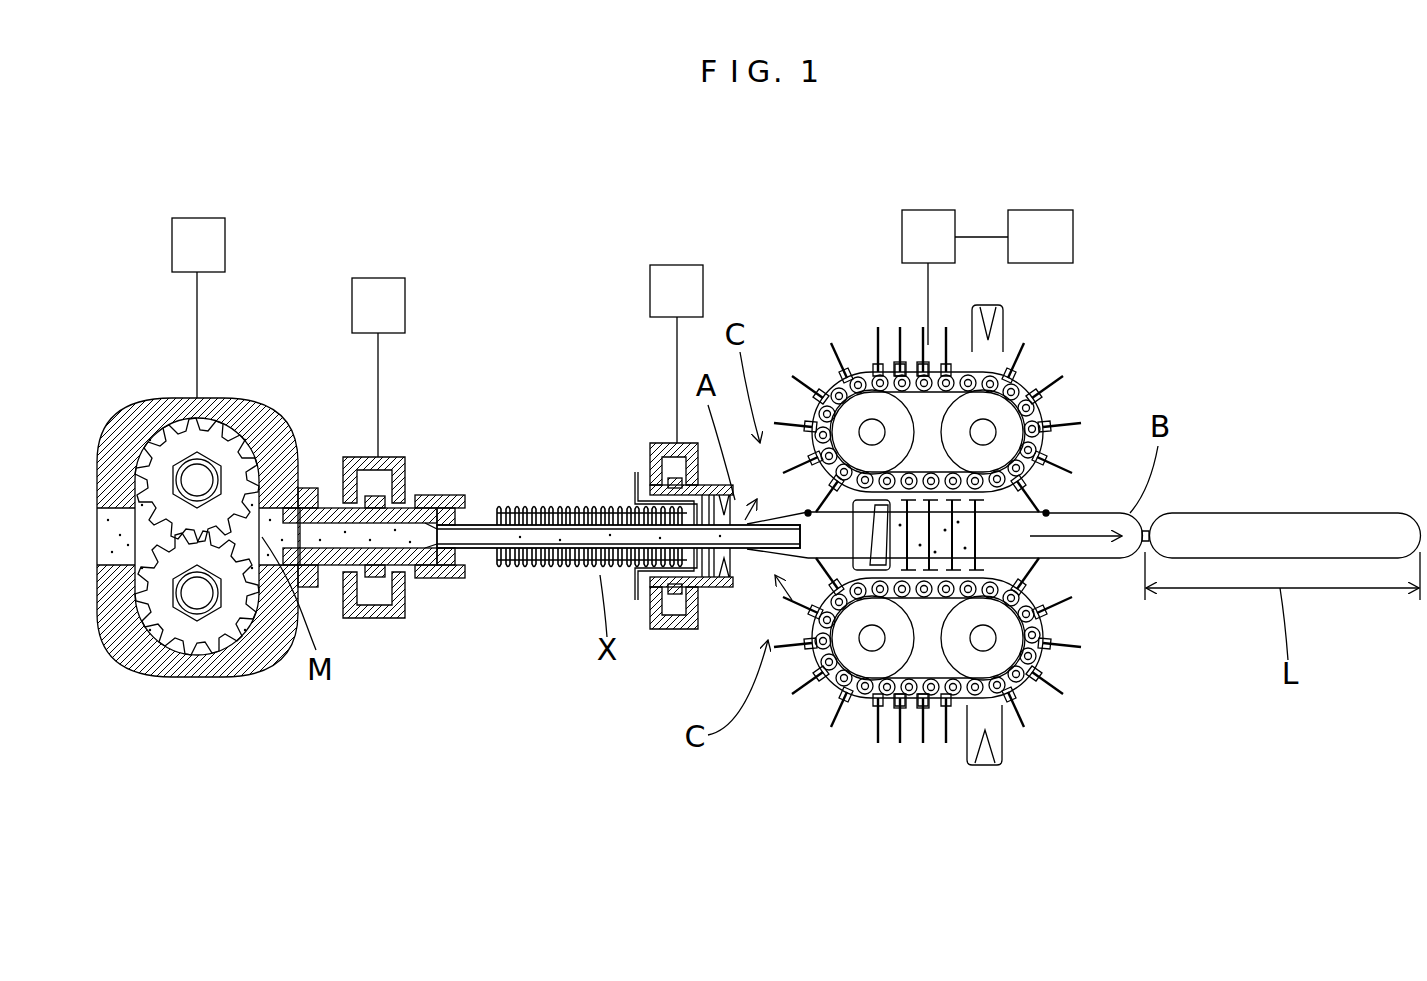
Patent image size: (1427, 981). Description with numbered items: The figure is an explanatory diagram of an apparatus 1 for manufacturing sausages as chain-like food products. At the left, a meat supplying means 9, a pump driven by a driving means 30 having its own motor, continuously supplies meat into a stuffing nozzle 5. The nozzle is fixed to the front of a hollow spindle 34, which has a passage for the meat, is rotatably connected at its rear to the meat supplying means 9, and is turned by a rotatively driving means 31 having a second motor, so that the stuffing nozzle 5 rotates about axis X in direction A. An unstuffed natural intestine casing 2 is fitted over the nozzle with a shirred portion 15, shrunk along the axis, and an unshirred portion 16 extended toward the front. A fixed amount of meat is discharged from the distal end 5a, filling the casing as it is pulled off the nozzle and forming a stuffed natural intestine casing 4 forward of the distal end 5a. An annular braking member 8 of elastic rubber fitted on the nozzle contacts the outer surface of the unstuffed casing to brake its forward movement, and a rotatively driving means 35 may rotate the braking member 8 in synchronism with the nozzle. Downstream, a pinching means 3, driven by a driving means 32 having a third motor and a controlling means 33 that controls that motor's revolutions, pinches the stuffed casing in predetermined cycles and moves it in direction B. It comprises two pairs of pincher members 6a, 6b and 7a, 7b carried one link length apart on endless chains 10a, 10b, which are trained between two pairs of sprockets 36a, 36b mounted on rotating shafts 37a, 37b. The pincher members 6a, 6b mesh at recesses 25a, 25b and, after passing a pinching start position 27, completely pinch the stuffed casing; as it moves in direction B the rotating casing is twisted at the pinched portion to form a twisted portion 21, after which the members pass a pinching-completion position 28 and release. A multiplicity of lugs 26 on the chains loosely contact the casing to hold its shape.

The apparatus 1 is at (487, 255).
The unstuffed natural intestine casing 2 is at (572, 510).
The pinching means 3 is at (1187, 742).
The stuffed natural intestine casing 4 is at (1095, 560).
The stuffing nozzle 5 is at (492, 505).
The distal end 5a is at (748, 560).
The pincher member 6a is at (759, 487).
The pincher member 6b is at (785, 599).
The pincher member 7a is at (1010, 350).
The pincher member 7b is at (1000, 745).
The annular braking member 8 is at (745, 566).
The meat supplying means 9 is at (283, 418).
The endless chain 10a is at (920, 352).
The endless chain 10b is at (903, 722).
The shirred portion 15 is at (548, 570).
The unshirred portion 16 is at (760, 552).
The twisted portion 21 is at (1152, 513).
The recess 25a is at (986, 308).
The recess 25b is at (985, 745).
The lugs 26 is at (905, 725).
The pinching start position 27 is at (808, 510).
The pinching-completion position 28 is at (1048, 511).
The driving means 30 is at (230, 297).
The rotatively driving means 31 is at (412, 445).
The driving means 32 is at (970, 200).
The controlling means 33 is at (1042, 225).
The spindle 34 is at (378, 600).
The rotatively driving means 35 is at (632, 325).
The sprockets 36a is at (860, 413).
The sprockets 36b is at (872, 640).
The rotating shafts 37a is at (872, 432).
The rotating shafts 37b is at (873, 657).